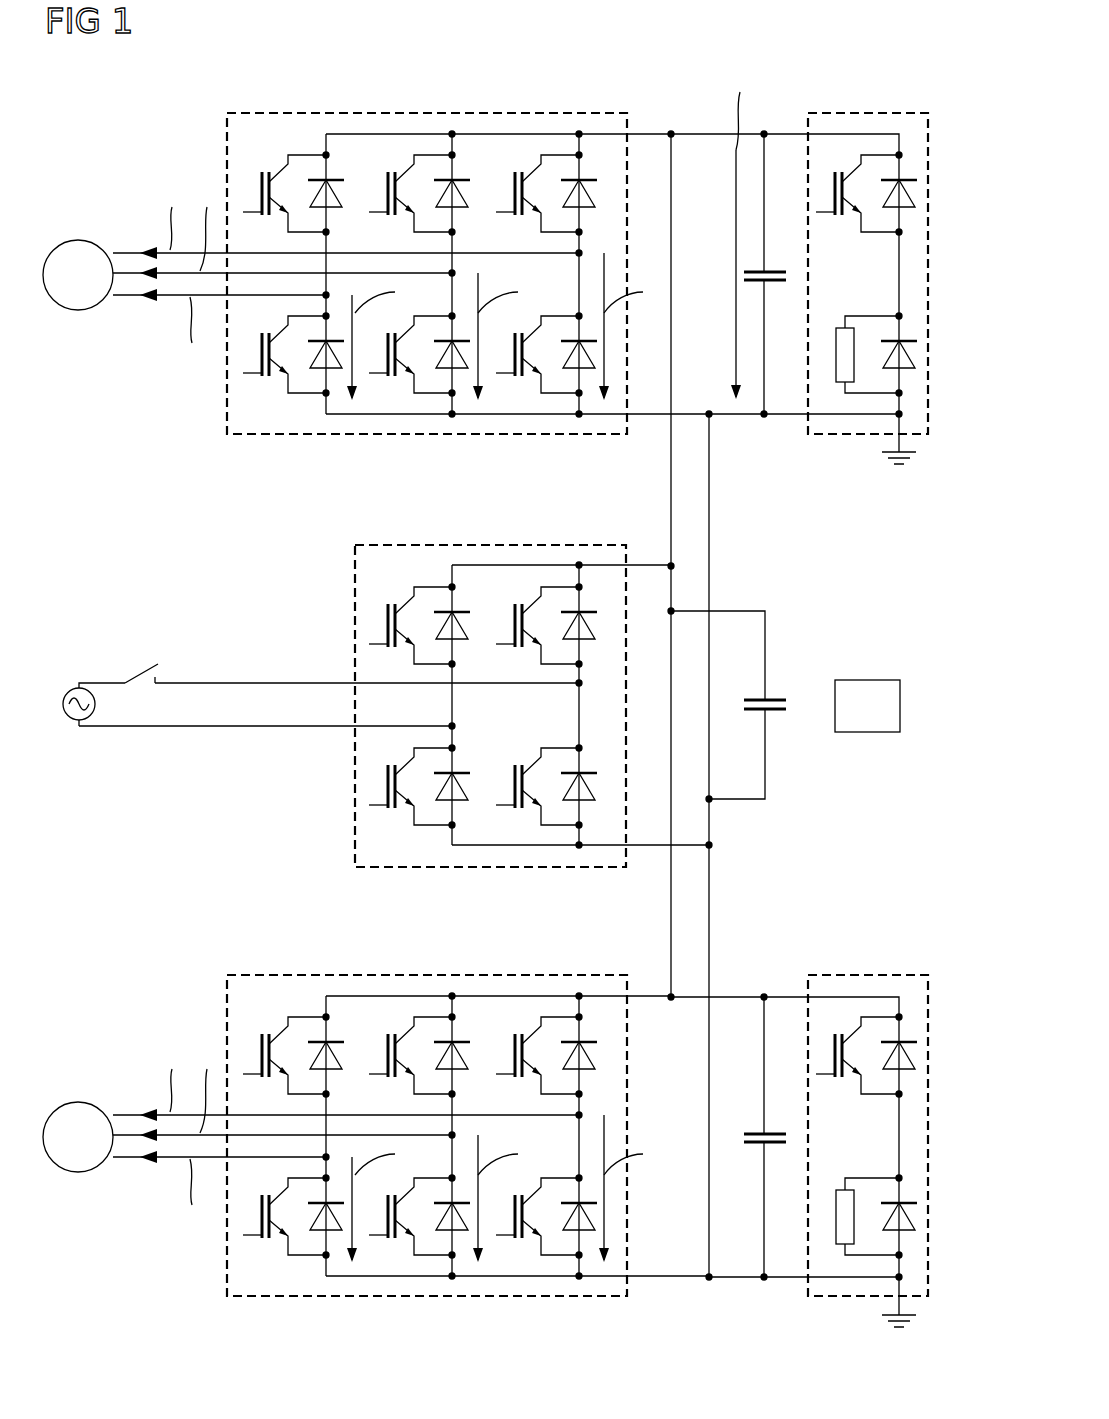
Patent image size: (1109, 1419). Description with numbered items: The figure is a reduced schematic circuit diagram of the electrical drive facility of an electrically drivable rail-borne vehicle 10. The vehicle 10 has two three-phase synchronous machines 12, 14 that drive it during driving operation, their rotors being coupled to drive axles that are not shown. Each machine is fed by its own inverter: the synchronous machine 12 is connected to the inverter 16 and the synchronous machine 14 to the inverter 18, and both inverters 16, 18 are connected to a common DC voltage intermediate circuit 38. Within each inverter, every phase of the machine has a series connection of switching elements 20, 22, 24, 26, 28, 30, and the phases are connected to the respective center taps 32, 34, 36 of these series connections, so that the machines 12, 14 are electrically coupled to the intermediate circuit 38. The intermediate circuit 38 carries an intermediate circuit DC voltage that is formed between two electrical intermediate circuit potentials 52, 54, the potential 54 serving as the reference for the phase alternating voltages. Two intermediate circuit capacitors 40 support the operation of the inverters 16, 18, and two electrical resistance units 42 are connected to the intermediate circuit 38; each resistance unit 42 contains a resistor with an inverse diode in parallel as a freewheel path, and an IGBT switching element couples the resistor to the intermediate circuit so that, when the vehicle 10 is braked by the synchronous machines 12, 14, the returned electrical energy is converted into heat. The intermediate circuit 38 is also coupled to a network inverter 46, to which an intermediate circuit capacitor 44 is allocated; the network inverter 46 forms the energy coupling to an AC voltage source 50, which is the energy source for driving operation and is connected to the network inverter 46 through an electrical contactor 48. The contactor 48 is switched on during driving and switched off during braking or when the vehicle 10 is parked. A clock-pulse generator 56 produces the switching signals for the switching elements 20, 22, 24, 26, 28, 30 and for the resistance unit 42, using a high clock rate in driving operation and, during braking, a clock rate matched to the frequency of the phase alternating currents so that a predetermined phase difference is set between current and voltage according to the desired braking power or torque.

The electrically drivable rail-borne vehicle 10 is at (152, 1262).
The three-phase synchronous machine 12 is at (78, 240).
The three-phase synchronous machine 14 is at (78, 1103).
The inverter 16 is at (300, 113).
The inverter 18 is at (300, 975).
The switching element 20 is at (247, 185).
The switching element 22 is at (247, 350).
The switching element 24 is at (372, 185).
The switching element 26 is at (373, 350).
The switching element 28 is at (500, 185).
The switching element 30 is at (500, 350).
The center tap 32 is at (326, 295).
The center tap 34 is at (452, 273).
The center tap 36 is at (579, 253).
The DC voltage intermediate circuit 38 is at (794, 76).
The intermediate circuit capacitor 40 is at (768, 268).
The electrical resistance unit 42 is at (857, 113).
The intermediate circuit capacitor 44 is at (770, 698).
The network inverter 46 is at (355, 612).
The electrical contactor 48 is at (137, 678).
The AC voltage source 50 is at (79, 688).
The intermediate circuit potential 52 is at (671, 134).
The intermediate circuit potential 54 is at (727, 418).
The clock-pulse generator 56 is at (865, 680).